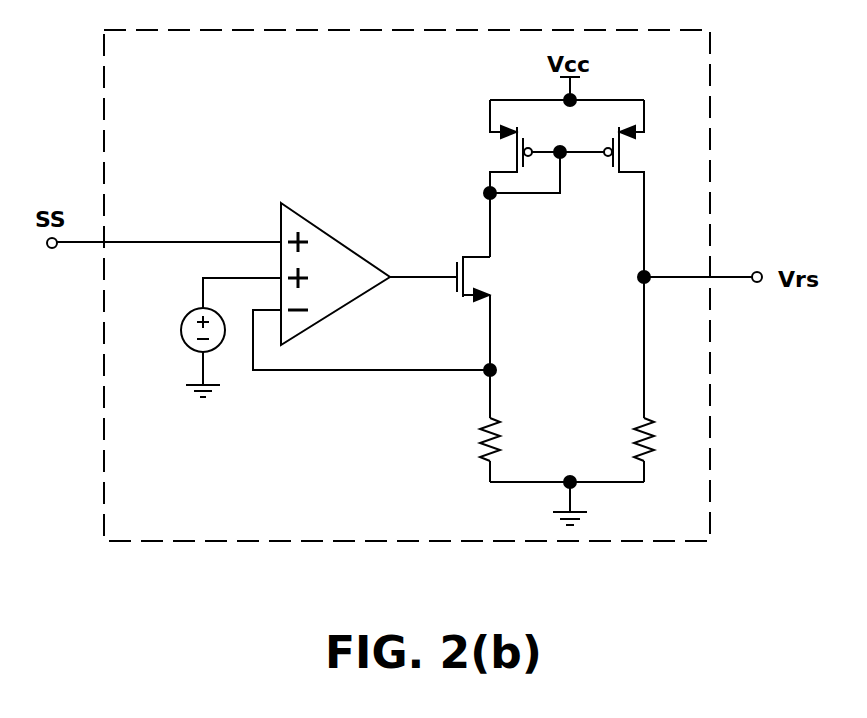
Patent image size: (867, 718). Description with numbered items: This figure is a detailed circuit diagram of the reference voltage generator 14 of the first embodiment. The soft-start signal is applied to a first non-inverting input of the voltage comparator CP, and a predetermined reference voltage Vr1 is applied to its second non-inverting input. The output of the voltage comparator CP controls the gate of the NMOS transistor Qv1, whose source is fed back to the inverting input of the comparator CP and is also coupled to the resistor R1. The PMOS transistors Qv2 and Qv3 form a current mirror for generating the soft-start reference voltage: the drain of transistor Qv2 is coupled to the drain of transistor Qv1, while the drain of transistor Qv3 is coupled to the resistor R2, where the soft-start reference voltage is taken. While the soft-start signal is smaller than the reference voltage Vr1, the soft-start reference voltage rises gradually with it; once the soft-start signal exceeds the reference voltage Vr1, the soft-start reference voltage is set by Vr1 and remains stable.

The reference voltage generator 14 is at (712, 95).
The voltage comparator CP is at (340, 240).
The reference voltage Vr1 is at (209, 337).
The NMOS transistor Qv1 is at (457, 257).
The PMOS transistor Qv2 is at (518, 149).
The PMOS transistor Qv3 is at (648, 259).
The resistor R1 is at (466, 450).
The resistor R2 is at (620, 450).